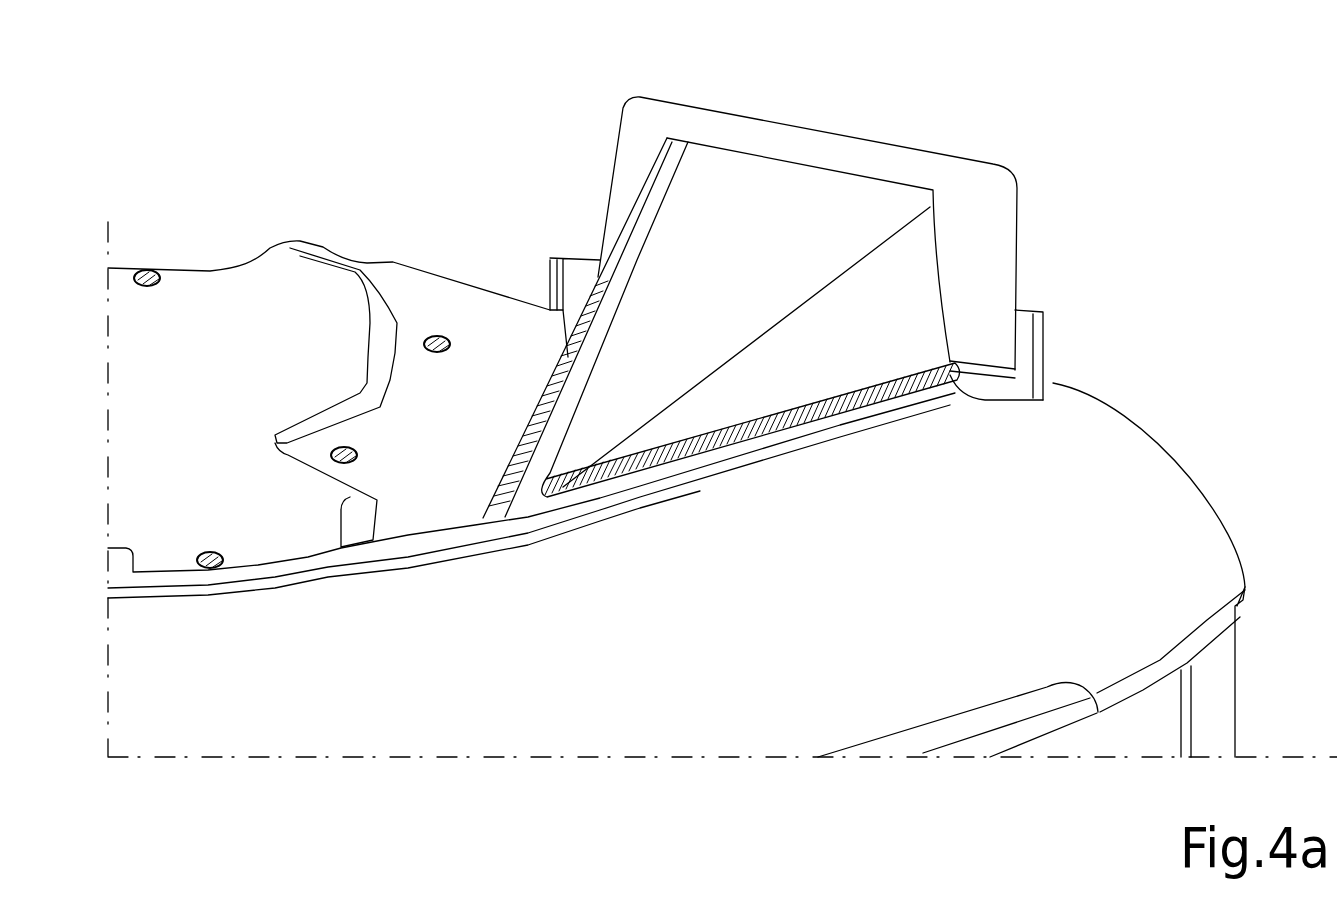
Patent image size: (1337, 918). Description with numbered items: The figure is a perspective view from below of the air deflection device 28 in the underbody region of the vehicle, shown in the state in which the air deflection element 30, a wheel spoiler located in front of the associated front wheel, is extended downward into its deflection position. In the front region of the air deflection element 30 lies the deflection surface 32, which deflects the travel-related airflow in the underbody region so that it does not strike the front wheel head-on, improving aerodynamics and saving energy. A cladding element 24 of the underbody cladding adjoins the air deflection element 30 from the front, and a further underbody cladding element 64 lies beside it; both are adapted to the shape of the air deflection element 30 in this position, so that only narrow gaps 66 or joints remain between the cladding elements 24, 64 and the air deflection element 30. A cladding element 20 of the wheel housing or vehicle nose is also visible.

The cladding element 20 is at (1207, 700).
The cladding element 24 is at (1135, 468).
The air deflection device 28 is at (1080, 212).
The air deflection element 30 is at (840, 118).
The deflection surface 32 is at (727, 190).
The underbody cladding element 64 is at (298, 290).
The gaps 66 is at (553, 387).